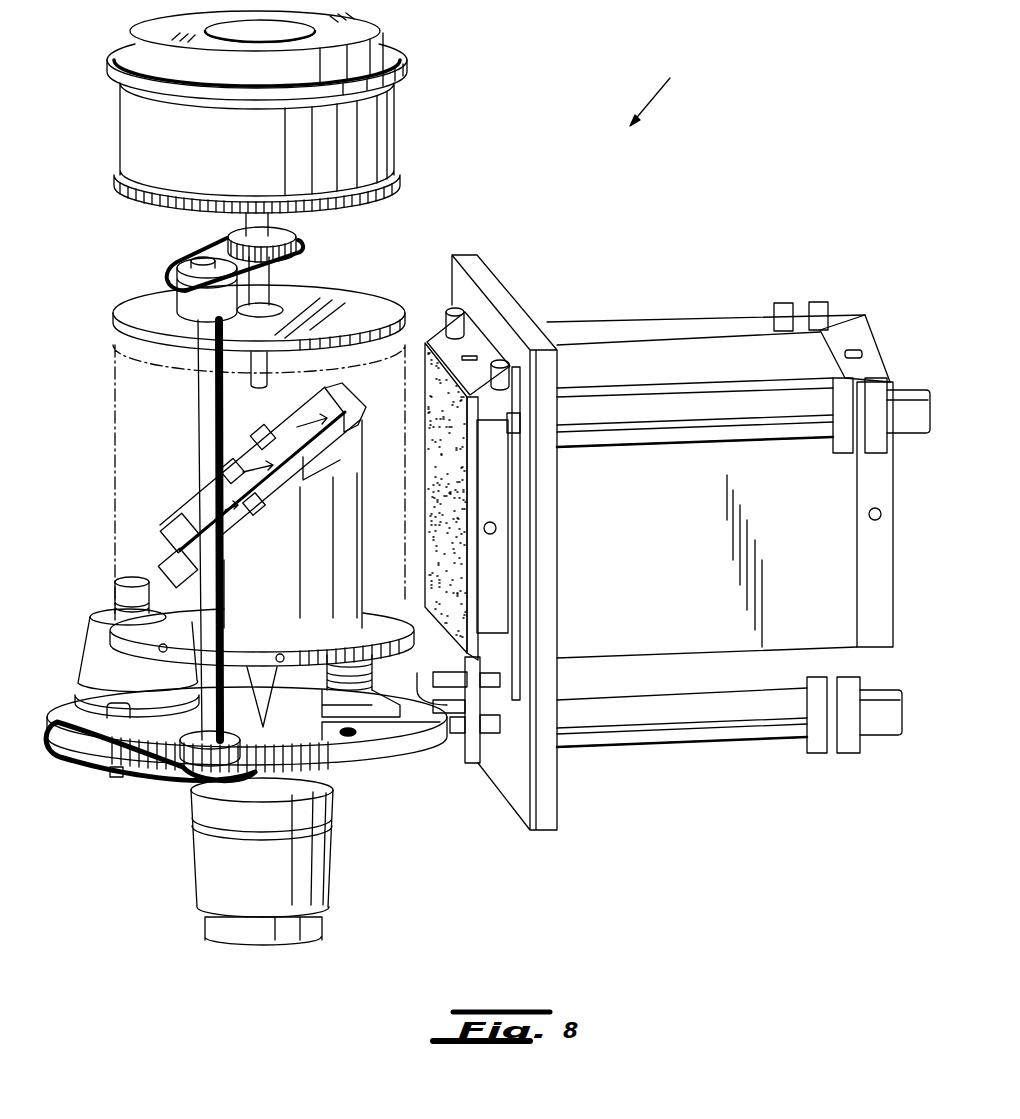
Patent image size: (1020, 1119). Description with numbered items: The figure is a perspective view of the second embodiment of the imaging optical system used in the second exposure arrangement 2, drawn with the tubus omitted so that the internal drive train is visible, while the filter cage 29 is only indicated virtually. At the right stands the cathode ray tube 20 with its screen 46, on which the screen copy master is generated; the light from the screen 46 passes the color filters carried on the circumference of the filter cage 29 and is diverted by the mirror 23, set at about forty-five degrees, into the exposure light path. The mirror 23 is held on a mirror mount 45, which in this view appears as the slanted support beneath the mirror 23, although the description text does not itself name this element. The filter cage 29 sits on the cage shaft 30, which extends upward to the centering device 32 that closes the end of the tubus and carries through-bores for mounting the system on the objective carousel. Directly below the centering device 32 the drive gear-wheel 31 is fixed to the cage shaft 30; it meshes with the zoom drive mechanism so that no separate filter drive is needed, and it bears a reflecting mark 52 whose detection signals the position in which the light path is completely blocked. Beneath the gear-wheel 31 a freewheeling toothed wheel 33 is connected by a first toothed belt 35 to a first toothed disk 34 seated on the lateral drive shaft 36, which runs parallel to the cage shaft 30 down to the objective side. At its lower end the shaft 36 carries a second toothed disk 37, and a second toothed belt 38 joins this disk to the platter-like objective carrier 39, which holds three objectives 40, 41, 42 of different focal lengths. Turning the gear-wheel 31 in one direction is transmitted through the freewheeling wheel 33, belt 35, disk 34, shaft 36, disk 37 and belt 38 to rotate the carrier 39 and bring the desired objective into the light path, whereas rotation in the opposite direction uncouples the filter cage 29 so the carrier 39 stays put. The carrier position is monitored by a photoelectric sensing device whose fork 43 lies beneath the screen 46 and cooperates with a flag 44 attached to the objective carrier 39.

The second exposure arrangement 2 is at (656, 92).
The cathode ray tube 20 is at (703, 637).
The mirror 23 is at (280, 457).
The filter cage 29 is at (113, 413).
The cage shaft 30 is at (262, 386).
The gear-wheel 31 is at (402, 181).
The centering device 32 is at (380, 40).
The freewheeling toothed wheel 33 is at (227, 234).
The first toothed disk 34 is at (177, 266).
The first toothed belt 35 is at (282, 268).
The lateral drive shaft 36 is at (207, 474).
The second toothed disk 37 is at (202, 793).
The second toothed belt 38 is at (152, 773).
The platter-like objective carrier 39 is at (77, 698).
The objective 40 is at (315, 877).
The objective 41 is at (92, 652).
The objective 42 is at (366, 768).
The fork 43 is at (478, 763).
The flag 44 is at (440, 700).
The mirror holder 45 is at (340, 543).
The screen 46 is at (447, 443).
The reflecting mark 52 is at (385, 131).